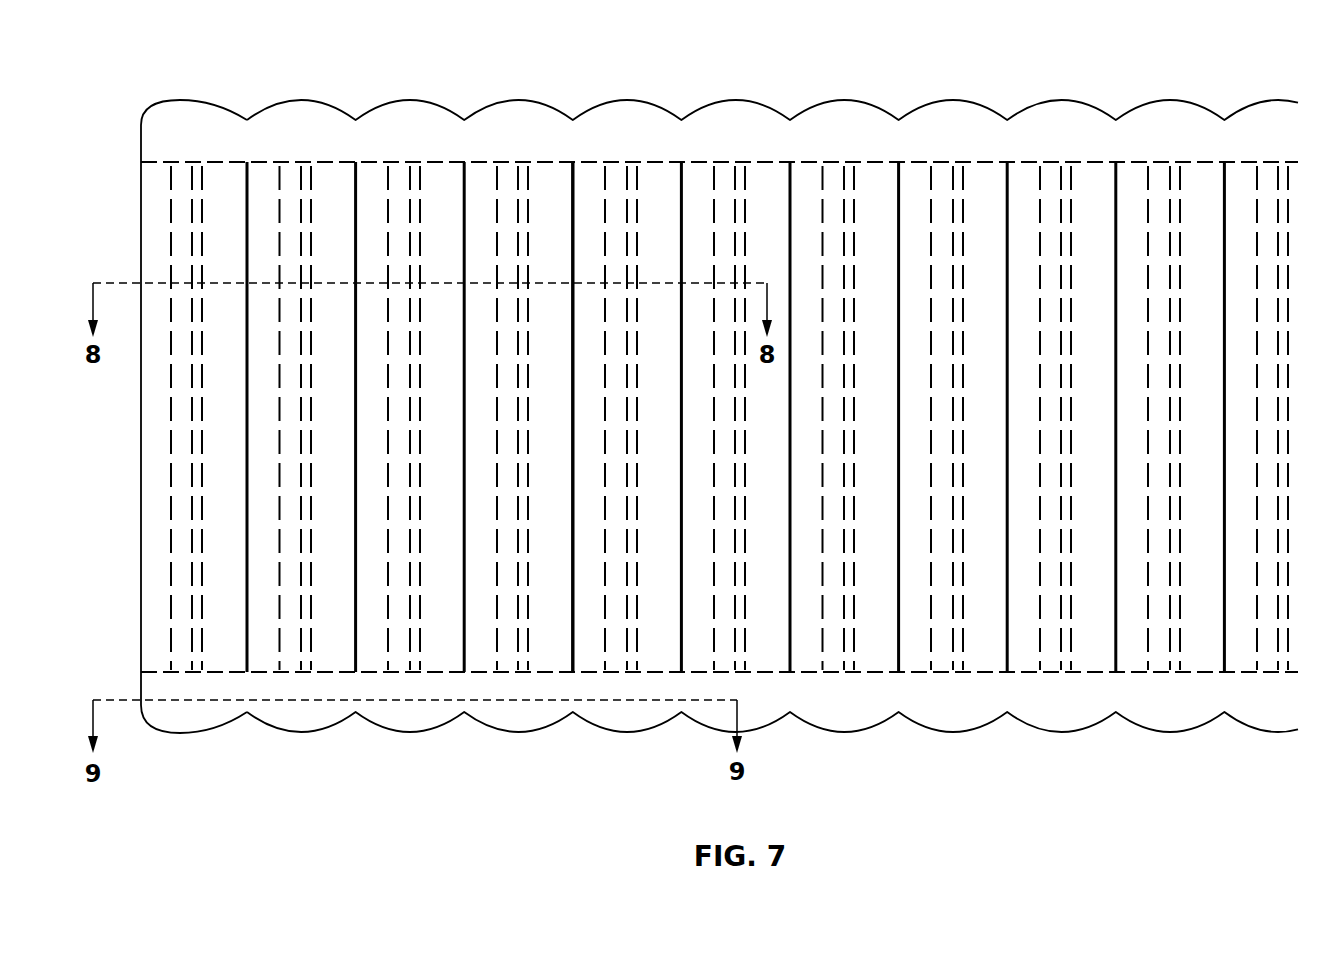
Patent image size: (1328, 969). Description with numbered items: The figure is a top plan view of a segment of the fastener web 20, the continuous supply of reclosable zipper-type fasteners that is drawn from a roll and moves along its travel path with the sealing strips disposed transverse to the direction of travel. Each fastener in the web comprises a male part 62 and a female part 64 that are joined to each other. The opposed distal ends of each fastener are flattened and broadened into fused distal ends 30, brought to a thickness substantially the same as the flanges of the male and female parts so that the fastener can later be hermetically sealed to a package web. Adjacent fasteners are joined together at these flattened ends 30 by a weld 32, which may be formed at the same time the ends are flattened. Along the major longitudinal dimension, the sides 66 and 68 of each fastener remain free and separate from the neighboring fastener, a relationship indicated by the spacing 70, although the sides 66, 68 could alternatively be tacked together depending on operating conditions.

The fastener web 20 is at (979, 73).
The fused distal ends 30 is at (733, 106).
The weld 32 is at (790, 138).
The male part 62 is at (549, 186).
The female part 64 is at (478, 208).
The side 66 is at (268, 190).
The side 68 is at (466, 190).
The free and separate relationship 70 is at (357, 165).